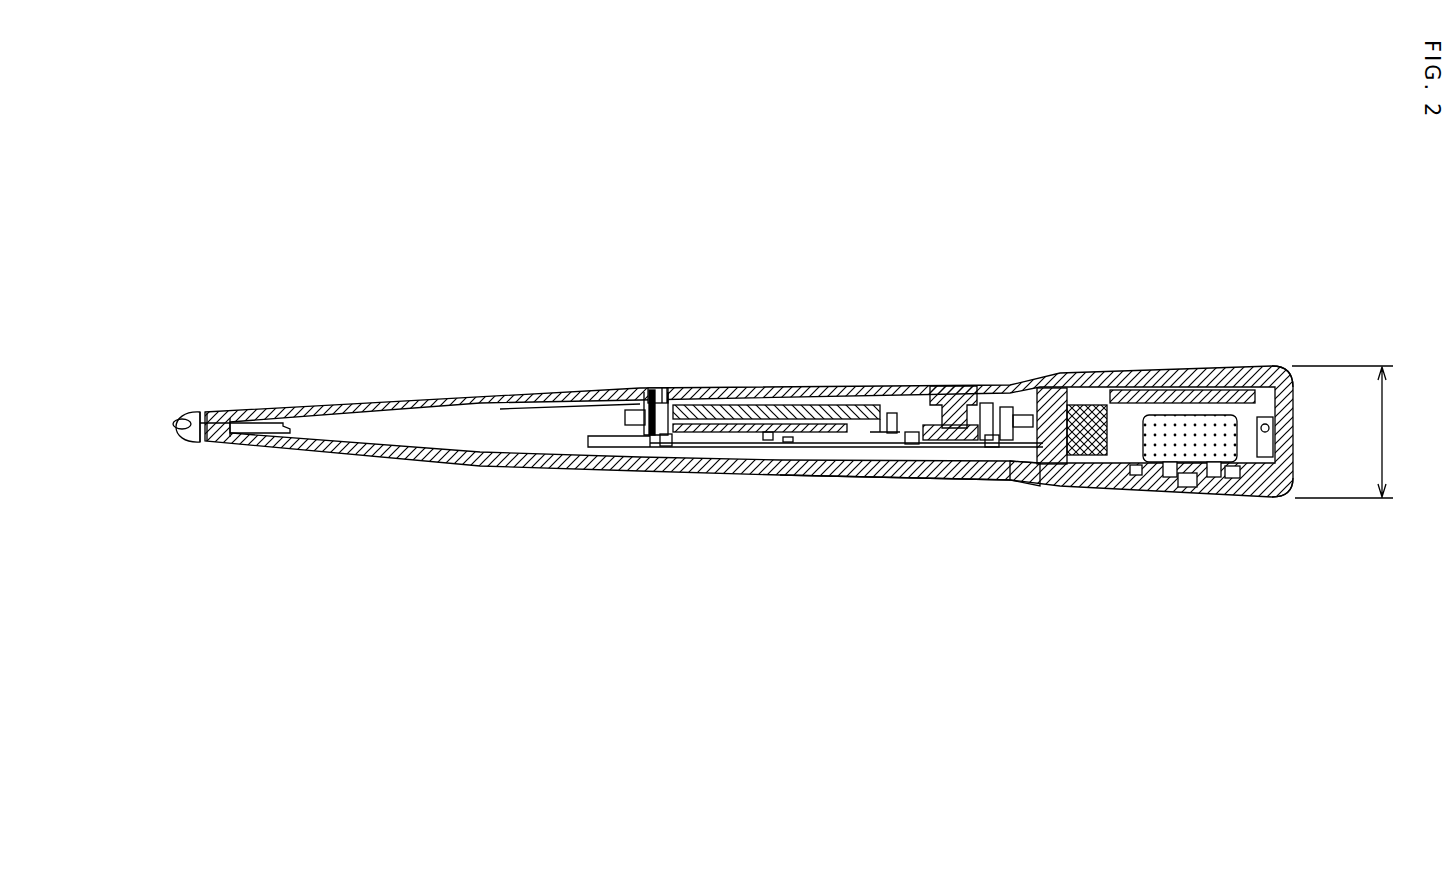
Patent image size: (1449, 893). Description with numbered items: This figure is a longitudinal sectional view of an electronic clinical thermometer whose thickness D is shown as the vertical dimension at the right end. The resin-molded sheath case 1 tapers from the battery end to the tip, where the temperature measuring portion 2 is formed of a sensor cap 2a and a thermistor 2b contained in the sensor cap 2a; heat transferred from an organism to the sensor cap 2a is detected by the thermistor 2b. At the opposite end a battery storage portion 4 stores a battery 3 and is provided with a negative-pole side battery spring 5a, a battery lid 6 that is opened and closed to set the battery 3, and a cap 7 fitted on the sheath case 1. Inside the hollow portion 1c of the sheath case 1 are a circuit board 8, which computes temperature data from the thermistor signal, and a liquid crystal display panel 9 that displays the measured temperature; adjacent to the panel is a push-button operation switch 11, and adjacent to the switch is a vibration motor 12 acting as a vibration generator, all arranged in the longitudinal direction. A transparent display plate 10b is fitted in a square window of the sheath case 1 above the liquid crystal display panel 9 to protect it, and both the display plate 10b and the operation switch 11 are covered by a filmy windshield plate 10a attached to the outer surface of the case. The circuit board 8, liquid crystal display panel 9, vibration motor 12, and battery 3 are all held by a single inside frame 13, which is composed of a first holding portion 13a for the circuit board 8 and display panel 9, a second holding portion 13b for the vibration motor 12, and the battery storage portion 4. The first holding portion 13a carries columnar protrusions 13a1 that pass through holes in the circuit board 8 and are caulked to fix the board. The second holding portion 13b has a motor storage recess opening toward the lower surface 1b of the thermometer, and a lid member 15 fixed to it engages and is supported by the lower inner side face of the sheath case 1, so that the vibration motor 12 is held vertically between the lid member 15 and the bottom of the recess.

The sheath case 1 is at (388, 396).
The lower surface 1b is at (835, 480).
The hollow portion 1c is at (565, 428).
The temperature measuring portion 2 is at (180, 445).
The sensor cap 2a is at (172, 407).
The thermistor 2b is at (180, 408).
The battery 3 is at (1225, 445).
The battery storage portion 4 is at (1293, 373).
The negative-pole side battery spring 5a is at (1188, 377).
The battery lid 6 is at (1193, 490).
The cap 7 is at (1290, 492).
The circuit board 8 is at (793, 437).
The liquid crystal display panel 9 is at (746, 392).
The windshield plate 10a is at (668, 388).
The display plate 10b is at (697, 385).
The operation switch 11 is at (955, 380).
The vibration motor 12 is at (1095, 407).
The inside frame 13 is at (1162, 380).
The first holding portion 13a is at (645, 405).
The columnar protrusions 13a1 is at (668, 445).
The second holding portion 13b is at (1042, 400).
The lid member 15 is at (1047, 485).
The thickness D is at (1343, 432).